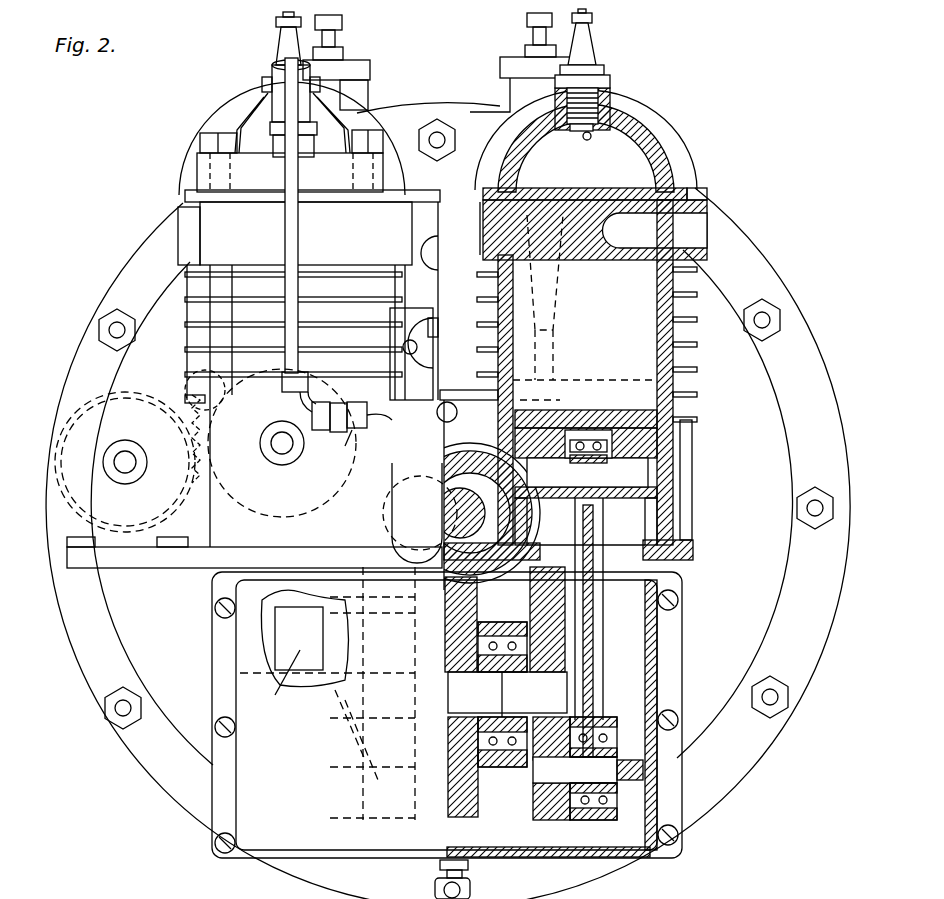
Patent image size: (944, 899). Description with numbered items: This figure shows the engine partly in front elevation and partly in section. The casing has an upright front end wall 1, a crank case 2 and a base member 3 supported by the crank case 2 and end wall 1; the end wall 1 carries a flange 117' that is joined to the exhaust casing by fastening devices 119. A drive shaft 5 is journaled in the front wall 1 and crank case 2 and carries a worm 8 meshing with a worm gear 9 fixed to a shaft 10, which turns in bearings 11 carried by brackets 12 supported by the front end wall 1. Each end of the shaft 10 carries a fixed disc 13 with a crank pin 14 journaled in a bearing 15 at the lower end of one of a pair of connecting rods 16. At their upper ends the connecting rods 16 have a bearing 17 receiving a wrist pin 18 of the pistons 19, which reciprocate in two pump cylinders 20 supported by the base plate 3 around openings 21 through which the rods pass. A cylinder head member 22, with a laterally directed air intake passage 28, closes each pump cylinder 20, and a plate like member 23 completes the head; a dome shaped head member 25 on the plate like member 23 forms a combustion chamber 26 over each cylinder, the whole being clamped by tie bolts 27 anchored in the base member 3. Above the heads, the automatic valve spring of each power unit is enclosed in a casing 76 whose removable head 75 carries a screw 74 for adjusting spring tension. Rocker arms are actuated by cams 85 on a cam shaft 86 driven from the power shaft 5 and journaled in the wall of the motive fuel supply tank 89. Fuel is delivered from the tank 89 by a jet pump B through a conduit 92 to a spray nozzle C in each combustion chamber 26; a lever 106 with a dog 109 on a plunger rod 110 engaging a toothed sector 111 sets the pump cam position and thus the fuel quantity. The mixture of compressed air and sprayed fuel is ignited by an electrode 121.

The upright front end wall 1 is at (262, 650).
The crank case 2 is at (447, 735).
The base member 3 is at (206, 573).
The drive shaft 5 is at (452, 515).
The worm 8 is at (463, 480).
The worm gear 9 is at (452, 652).
The shaft 10 is at (507, 692).
The bearings 11 is at (510, 655).
The brackets 12 is at (493, 622).
The fixed disc 13 is at (555, 645).
The crank pin 14 is at (588, 751).
The bearing 15 is at (600, 812).
The connecting rods 16 is at (616, 677).
The bearing 17 is at (578, 452).
The wrist pin 18 is at (597, 470).
The pistons 19 is at (590, 420).
The pump cylinders 20 is at (215, 340).
The openings 21 is at (630, 562).
The cylinder head member 22 is at (585, 282).
The plate like member 23 is at (334, 200).
The dome shaped head member 25 is at (265, 162).
The combustion chamber 26 is at (377, 169).
The tie bolts 27 is at (218, 136).
The air intake passage 28 is at (690, 232).
The screw 74 is at (331, 36).
The removable head 75 is at (365, 63).
The casing 76 is at (355, 90).
The cams 85 is at (467, 406).
The cam shaft 86 is at (425, 422).
The motive fuel supply tank 89 is at (417, 507).
The conduit 92 is at (290, 247).
The lever 106 is at (434, 374).
The dog 109 is at (436, 336).
The plunger rod 110 is at (434, 232).
The sector 111 is at (438, 326).
The flange 117' is at (448, 501).
The fastening devices 119 is at (437, 138).
The electrode 121 is at (588, 140).
The fuel pump B is at (357, 436).
The spray nozzle C is at (278, 98).